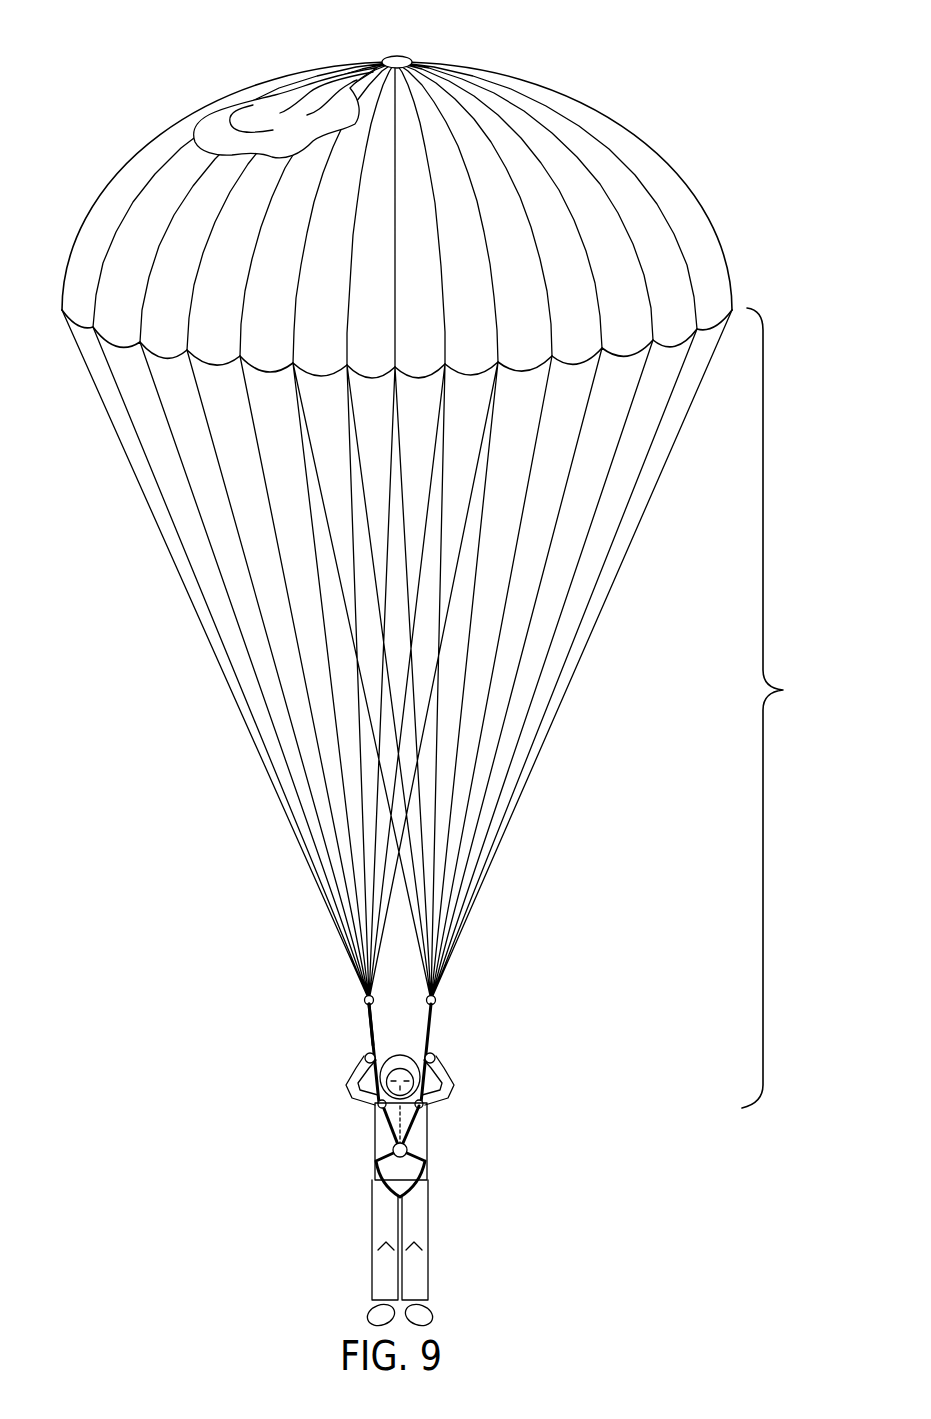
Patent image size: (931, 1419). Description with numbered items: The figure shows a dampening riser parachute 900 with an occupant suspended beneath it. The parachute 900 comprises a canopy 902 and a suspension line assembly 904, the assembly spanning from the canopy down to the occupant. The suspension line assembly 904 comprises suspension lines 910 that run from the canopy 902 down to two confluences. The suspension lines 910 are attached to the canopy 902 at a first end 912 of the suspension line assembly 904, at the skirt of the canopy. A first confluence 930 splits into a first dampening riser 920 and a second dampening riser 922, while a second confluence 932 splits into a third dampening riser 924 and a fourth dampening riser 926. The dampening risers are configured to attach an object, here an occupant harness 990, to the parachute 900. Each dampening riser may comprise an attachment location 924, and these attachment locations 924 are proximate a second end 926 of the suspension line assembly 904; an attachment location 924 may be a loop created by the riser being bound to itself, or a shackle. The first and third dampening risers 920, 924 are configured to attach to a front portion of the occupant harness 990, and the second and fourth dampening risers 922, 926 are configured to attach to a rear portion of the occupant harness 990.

The dampening riser parachute 900 is at (702, 96).
The canopy 902 is at (574, 138).
The suspension line assembly 904 is at (778, 708).
The suspension lines 910 is at (228, 600).
The first end 912 is at (104, 356).
The first dampening riser 920 is at (368, 1017).
The second dampening riser 922 is at (370, 1032).
The attachment location 924 is at (436, 1052).
The second end 926 is at (432, 1029).
The first confluence 930 is at (365, 1000).
The second confluence 932 is at (435, 999).
The occupant harness 990 is at (428, 1140).